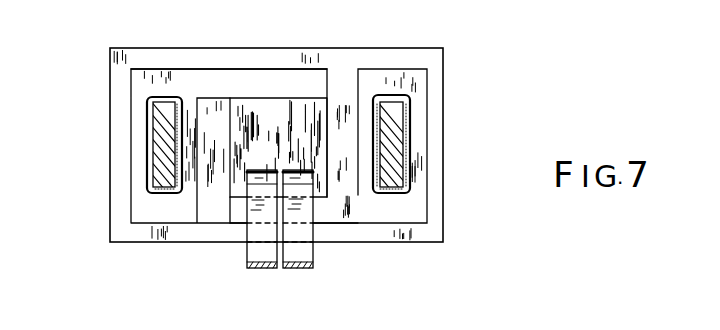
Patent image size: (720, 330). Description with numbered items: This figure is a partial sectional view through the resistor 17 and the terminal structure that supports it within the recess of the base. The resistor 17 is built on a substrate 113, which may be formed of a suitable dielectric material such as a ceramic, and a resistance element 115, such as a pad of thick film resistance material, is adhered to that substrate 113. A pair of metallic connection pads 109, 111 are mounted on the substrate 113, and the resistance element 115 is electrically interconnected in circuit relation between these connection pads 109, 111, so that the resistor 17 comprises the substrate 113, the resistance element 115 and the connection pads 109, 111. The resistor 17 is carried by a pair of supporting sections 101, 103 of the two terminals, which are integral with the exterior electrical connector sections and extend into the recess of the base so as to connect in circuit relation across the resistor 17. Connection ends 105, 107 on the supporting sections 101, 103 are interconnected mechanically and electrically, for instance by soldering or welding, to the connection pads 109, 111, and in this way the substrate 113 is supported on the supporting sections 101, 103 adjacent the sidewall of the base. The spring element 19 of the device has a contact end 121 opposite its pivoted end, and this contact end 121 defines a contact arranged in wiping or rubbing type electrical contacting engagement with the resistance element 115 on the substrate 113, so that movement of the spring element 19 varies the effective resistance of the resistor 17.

The resistor 17 is at (458, 59).
The spring element 19 is at (267, 268).
The supporting section 101 is at (152, 161).
The supporting section 103 is at (403, 156).
The connection end 105 is at (157, 121).
The connection end 107 is at (400, 122).
The connection pad 109 is at (163, 73).
The connection pad 111 is at (385, 76).
The substrate 113 is at (110, 60).
The resistance element 115 is at (265, 108).
The contact end 121 is at (263, 205).